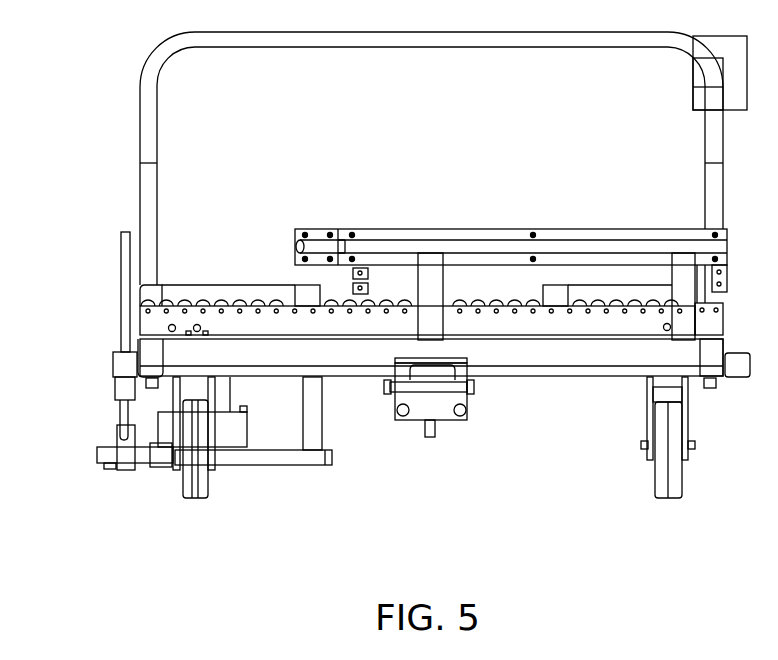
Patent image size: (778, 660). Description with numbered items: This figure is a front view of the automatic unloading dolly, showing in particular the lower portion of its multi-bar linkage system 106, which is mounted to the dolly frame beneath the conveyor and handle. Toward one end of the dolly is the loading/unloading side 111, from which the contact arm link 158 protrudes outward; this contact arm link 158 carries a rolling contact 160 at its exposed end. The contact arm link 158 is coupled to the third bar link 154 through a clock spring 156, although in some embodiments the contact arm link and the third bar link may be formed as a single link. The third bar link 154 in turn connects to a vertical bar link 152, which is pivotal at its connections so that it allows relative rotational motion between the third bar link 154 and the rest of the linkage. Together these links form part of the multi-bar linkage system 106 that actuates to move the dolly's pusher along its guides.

The multi-bar linkage system 106 is at (287, 490).
The loading/unloading side 111 is at (108, 270).
The vertical bar link 152 is at (318, 422).
The third bar link 154 is at (318, 460).
The clock spring 156 is at (228, 440).
The contact arm link 158 is at (140, 470).
The rolling contact 160 is at (97, 455).